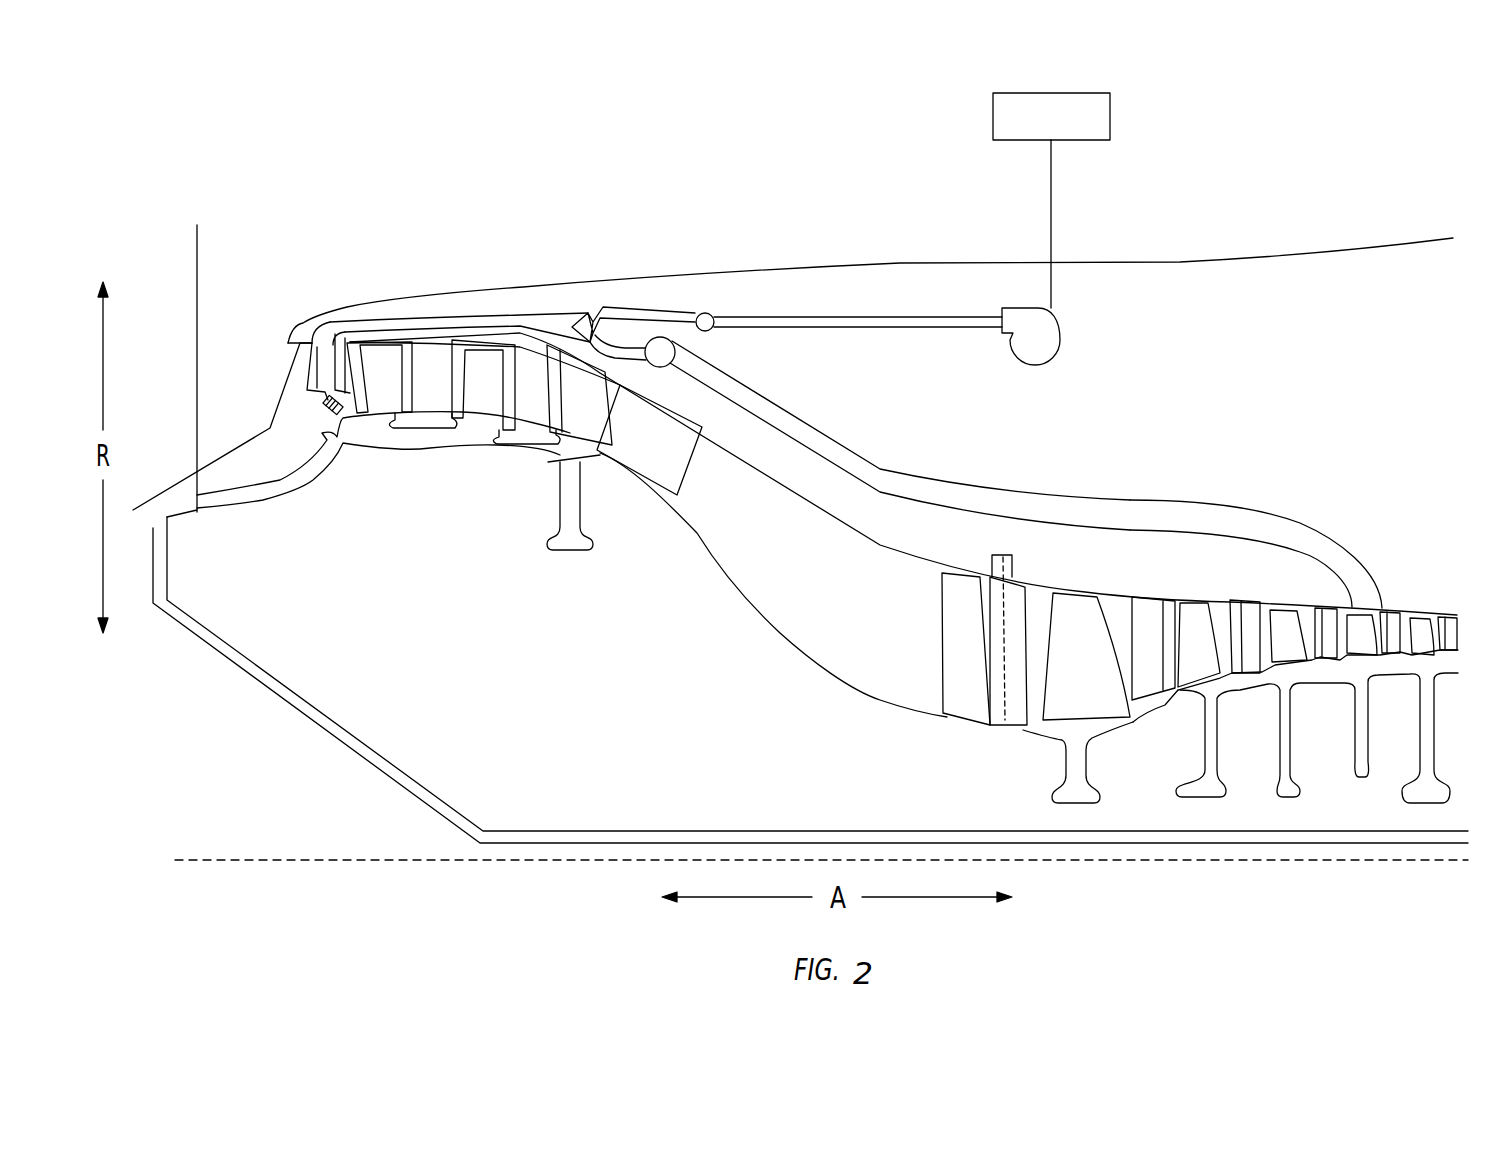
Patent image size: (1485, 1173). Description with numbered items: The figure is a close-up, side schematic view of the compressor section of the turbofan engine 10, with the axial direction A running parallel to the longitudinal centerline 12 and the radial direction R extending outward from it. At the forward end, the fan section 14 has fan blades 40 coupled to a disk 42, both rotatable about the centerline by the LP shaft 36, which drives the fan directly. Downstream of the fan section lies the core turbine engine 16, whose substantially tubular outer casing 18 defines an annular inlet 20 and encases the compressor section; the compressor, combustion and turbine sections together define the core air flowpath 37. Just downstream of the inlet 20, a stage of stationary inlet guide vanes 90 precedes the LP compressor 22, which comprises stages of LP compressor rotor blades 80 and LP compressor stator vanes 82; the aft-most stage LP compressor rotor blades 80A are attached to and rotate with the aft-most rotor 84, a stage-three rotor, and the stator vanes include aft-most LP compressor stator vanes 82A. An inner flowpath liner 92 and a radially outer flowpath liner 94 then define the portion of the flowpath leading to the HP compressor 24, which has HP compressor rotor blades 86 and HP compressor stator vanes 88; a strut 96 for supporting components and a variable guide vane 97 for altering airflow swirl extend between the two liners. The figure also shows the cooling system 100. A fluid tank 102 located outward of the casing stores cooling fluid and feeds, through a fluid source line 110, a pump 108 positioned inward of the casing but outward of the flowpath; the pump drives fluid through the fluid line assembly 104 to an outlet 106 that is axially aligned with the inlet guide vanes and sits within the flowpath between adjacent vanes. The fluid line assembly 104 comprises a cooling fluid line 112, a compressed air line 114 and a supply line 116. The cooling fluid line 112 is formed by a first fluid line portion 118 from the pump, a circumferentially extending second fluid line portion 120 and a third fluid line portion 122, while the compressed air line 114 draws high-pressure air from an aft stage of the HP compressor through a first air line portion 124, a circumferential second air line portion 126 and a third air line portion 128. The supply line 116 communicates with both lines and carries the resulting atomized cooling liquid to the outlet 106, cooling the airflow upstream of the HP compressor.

The turbofan engine 10 is at (1282, 152).
The longitudinal centerline 12 is at (373, 861).
The fan section 14 is at (247, 243).
The core turbine engine 16 is at (806, 160).
The outer casing 18 is at (1183, 262).
The annular inlet 20 is at (267, 343).
The low pressure compressor 22 is at (446, 556).
The high pressure compressor 24 is at (1202, 548).
The low pressure shaft 36 is at (698, 833).
The core air flowpath 37 is at (723, 548).
The fan blades 40 is at (194, 250).
The disk 42 is at (177, 507).
The LP compressor rotor blades 80 is at (373, 400).
The aft-most stage LP compressor rotor blades 80A is at (533, 465).
The LP compressor stator vanes 82 is at (425, 360).
The aft-most LP compressor stator vanes 82A is at (620, 445).
The aft-most rotor 84 is at (556, 545).
The HP compressor rotor blades 86 is at (1070, 622).
The HP compressor stator vanes 88 is at (1140, 622).
The inlet guide vanes 90 is at (313, 347).
The inner flowpath liner 92 is at (763, 621).
The outer flowpath liner 94 is at (826, 532).
The strut 96 is at (817, 622).
The variable guide vane 97 is at (982, 706).
The cooling system 100 is at (698, 233).
The fluid tank 102 is at (1051, 116).
The fluid line assembly 104 is at (964, 411).
The outlet 106 is at (340, 430).
The pump 108 is at (1062, 347).
The fluid source line 110 is at (1053, 218).
The cooling fluid line 112 is at (780, 292).
The compressed air line 114 is at (1037, 467).
The supply line 116 is at (478, 320).
The first fluid line portion 118 is at (877, 318).
The second fluid line portion 120 is at (706, 313).
The third fluid line portion 122 is at (604, 306).
The first air line portion 124 is at (921, 483).
The second air line portion 126 is at (678, 353).
The third air line portion 128 is at (618, 348).